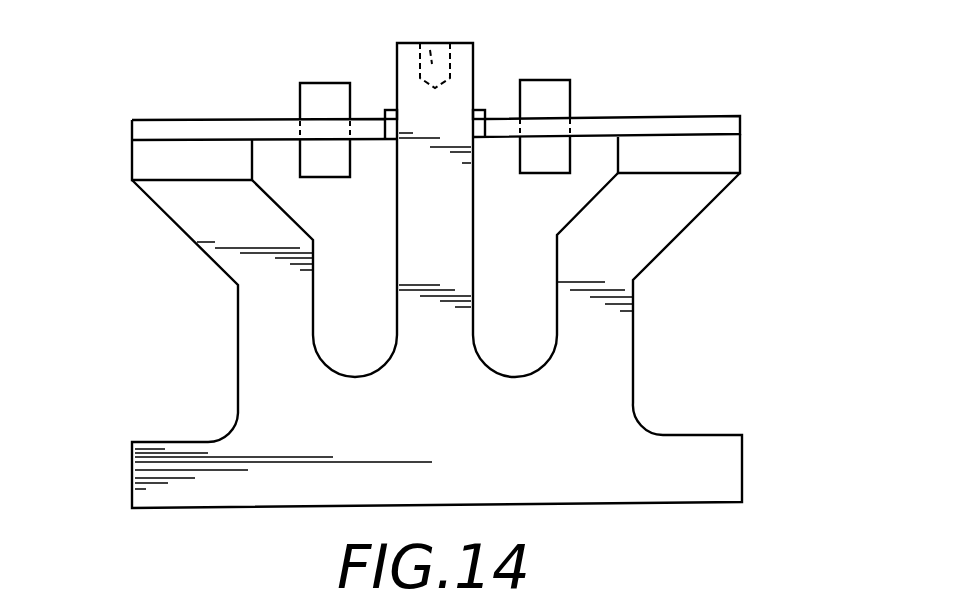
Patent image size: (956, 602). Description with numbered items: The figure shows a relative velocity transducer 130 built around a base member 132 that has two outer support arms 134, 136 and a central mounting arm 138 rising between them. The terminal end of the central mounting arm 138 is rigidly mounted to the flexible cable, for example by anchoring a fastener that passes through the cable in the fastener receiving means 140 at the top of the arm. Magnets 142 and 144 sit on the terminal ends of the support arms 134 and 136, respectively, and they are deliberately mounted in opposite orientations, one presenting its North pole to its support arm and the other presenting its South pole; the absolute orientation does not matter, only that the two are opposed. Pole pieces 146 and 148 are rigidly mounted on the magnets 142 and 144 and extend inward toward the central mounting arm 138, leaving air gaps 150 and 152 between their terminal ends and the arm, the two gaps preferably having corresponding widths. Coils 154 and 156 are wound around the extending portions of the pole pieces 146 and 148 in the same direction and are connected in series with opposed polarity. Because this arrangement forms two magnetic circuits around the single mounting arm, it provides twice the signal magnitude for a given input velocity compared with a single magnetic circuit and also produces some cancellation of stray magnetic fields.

The relative velocity transducer 130 is at (708, 327).
The base member 132 is at (493, 475).
The support arm 134 is at (673, 238).
The support arm 136 is at (287, 214).
The central mounting arm 138 is at (473, 253).
The fastener receiving means 140 is at (432, 43).
The magnet 142 is at (727, 155).
The magnet 144 is at (153, 153).
The pole piece 146 is at (660, 125).
The pole piece 148 is at (191, 132).
The air gap 150 is at (482, 110).
The air gap 152 is at (390, 107).
The coil 154 is at (562, 105).
The coil 156 is at (317, 90).